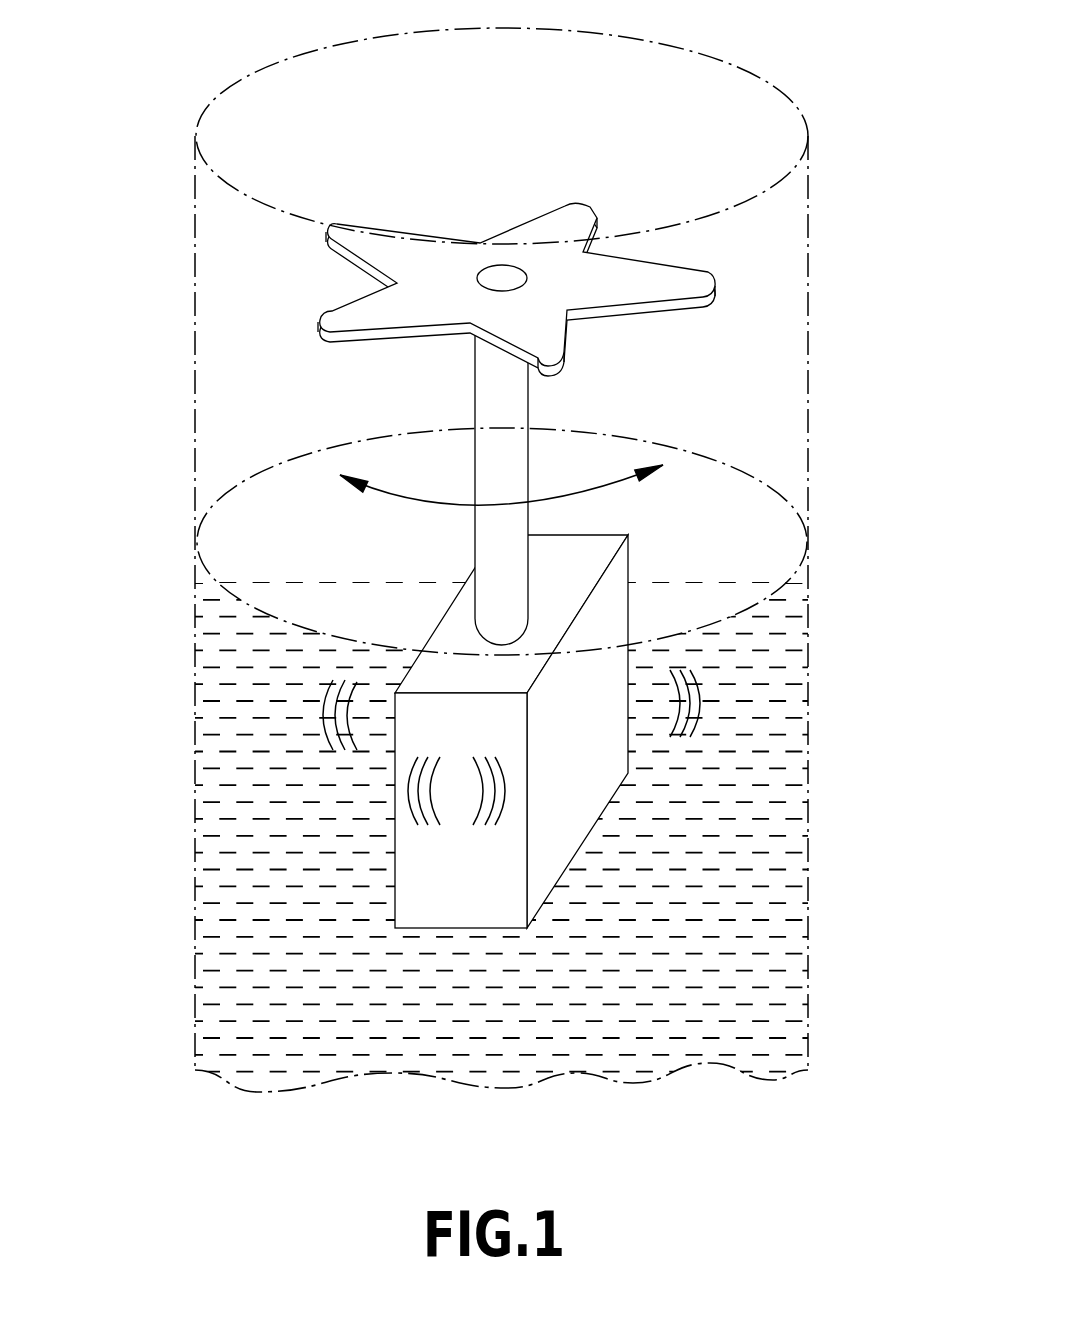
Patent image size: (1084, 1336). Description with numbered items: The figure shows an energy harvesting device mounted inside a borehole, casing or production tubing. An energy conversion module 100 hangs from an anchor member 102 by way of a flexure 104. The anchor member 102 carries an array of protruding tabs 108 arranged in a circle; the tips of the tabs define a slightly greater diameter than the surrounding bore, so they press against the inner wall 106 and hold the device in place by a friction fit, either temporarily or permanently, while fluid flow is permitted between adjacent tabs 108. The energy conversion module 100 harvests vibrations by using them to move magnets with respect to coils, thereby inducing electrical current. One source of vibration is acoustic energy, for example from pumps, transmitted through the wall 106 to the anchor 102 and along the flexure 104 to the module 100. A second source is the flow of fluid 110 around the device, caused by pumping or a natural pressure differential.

The energy conversion module 100 is at (587, 638).
The anchor member 102 is at (677, 278).
The flexure 104 is at (487, 447).
The wall 106 is at (190, 161).
The protruding tabs 108 is at (365, 223).
The fluid 110 is at (790, 806).